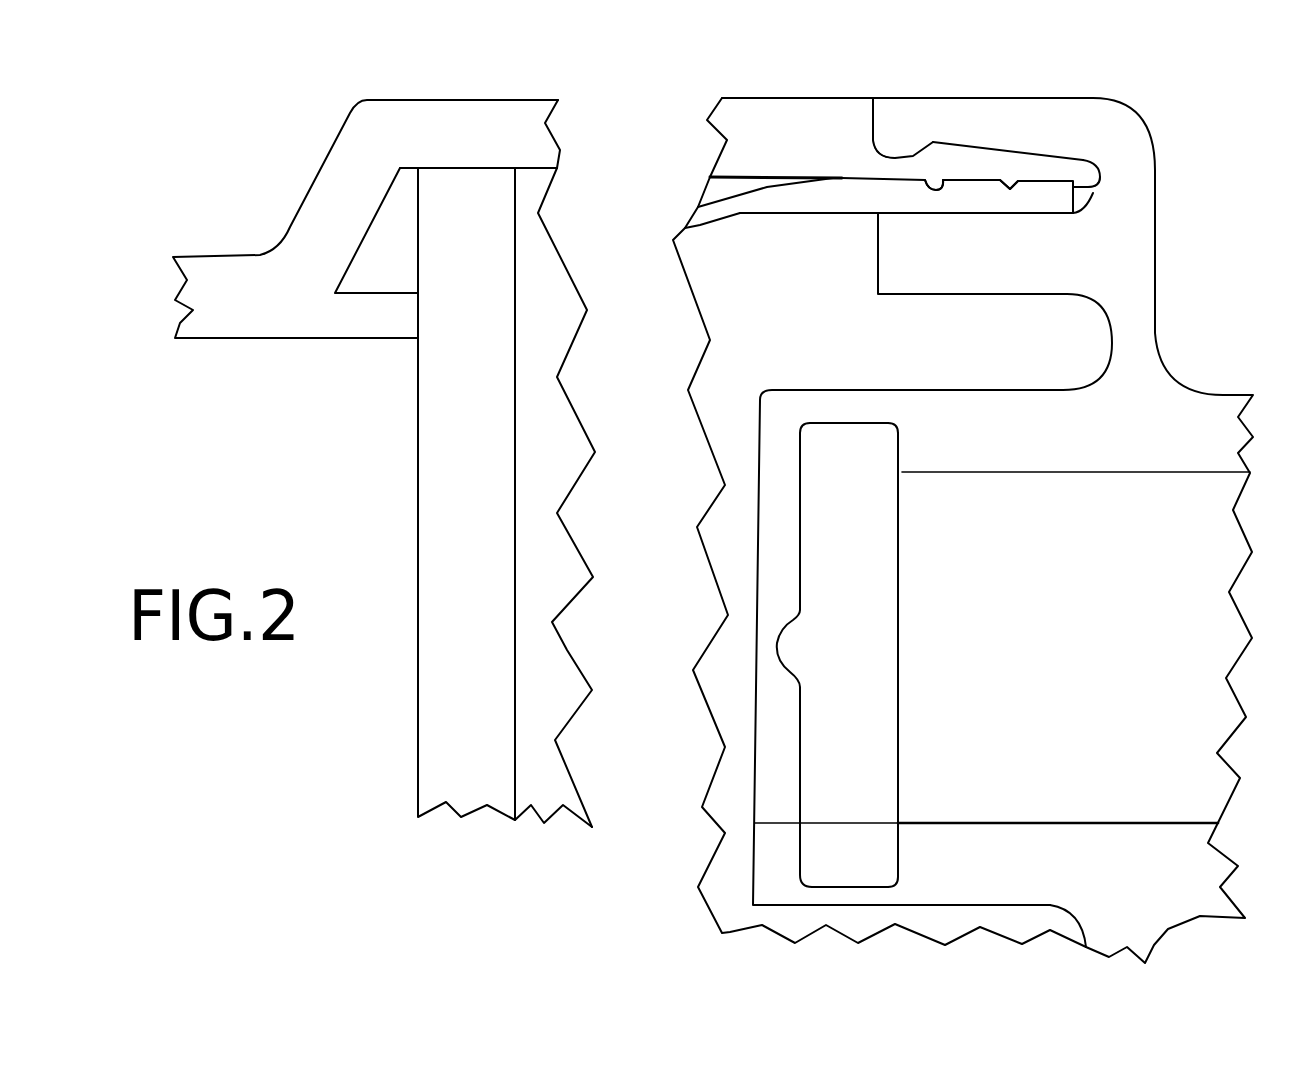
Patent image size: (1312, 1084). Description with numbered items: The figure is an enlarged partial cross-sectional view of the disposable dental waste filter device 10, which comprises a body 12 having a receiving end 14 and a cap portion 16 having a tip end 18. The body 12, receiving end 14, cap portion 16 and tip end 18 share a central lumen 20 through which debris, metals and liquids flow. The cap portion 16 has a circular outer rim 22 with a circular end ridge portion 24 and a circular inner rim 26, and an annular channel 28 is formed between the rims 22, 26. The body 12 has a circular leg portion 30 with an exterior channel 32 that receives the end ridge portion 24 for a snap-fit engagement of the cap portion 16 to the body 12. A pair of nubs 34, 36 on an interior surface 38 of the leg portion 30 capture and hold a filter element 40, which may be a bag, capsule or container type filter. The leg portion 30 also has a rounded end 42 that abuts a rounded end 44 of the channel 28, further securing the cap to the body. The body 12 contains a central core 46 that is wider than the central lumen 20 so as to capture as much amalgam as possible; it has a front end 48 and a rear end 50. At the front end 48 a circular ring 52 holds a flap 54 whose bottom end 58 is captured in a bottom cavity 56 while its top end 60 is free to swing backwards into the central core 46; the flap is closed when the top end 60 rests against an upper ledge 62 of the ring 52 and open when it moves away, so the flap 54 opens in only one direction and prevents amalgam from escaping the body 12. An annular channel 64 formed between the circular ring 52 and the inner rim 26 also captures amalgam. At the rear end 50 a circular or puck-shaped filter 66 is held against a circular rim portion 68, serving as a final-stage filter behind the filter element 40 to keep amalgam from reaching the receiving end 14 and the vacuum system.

The disposable dental waste filter device 10 is at (515, 877).
The body 12 is at (620, 125).
The receiving end 14 is at (193, 240).
The cap portion 16 is at (1187, 215).
The tip end 18 is at (1258, 385).
The central lumen 20 is at (350, 600).
The circular outer rim 22 is at (1023, 115).
The circular end ridge portion 24 is at (891, 142).
The circular inner rim 26 is at (948, 280).
The annular channel 28 is at (1085, 193).
The circular leg portion 30 is at (1033, 167).
The exterior channel 32 is at (880, 138).
The nub 34 is at (927, 184).
The nub 36 is at (1002, 186).
The interior surface 38 is at (1040, 187).
The filter element 40 is at (795, 205).
The rounded end 42 is at (1088, 170).
The rounded end 44 is at (1102, 189).
The central core 46 is at (560, 311).
The front end 48 is at (712, 428).
The rear end 50 is at (547, 482).
The circular ring 52 is at (978, 458).
The flap 54 is at (868, 645).
The bottom cavity 56 is at (902, 820).
The bottom end 58 is at (878, 872).
The top end 60 is at (867, 422).
The upper ledge 62 is at (908, 460).
The annular channel 64 is at (1012, 365).
The filter 66 is at (428, 480).
The circular rim portion 68 is at (368, 318).